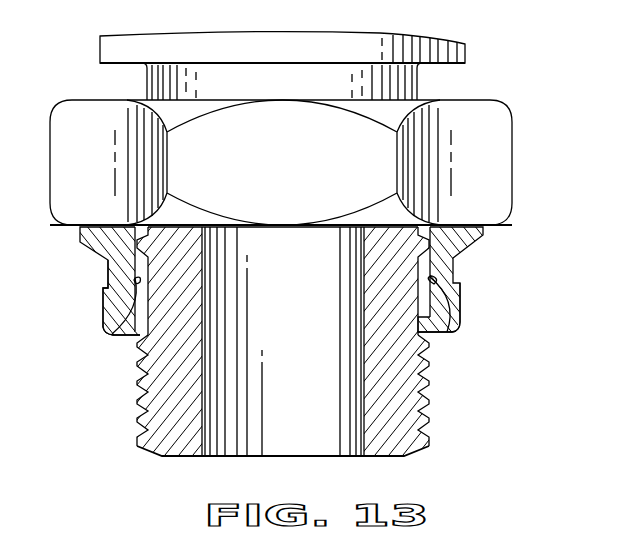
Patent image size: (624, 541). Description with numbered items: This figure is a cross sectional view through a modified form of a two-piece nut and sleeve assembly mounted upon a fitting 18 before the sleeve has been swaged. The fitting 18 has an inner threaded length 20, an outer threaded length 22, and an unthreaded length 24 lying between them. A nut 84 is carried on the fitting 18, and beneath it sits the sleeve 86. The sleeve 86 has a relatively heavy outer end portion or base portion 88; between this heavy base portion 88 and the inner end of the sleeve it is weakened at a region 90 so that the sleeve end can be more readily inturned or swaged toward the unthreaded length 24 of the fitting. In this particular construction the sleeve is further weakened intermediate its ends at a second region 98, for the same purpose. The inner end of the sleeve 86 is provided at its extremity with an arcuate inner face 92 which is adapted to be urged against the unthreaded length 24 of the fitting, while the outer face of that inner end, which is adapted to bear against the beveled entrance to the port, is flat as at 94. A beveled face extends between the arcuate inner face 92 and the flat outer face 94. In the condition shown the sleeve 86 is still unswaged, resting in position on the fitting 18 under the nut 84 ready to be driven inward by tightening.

The fitting 18 is at (395, 448).
The inner threaded length 20 is at (429, 382).
The outer threaded length 22 is at (437, 246).
The unthreaded length 24 is at (458, 318).
The nut 84 is at (505, 179).
The sleeve 86 is at (82, 287).
The outer end portion or base portion 88 is at (80, 237).
The weakened portion 90 is at (455, 277).
The arcuate inner face 92 is at (130, 333).
The flat outer face 94 is at (107, 332).
The further weakened portion 98 is at (135, 280).